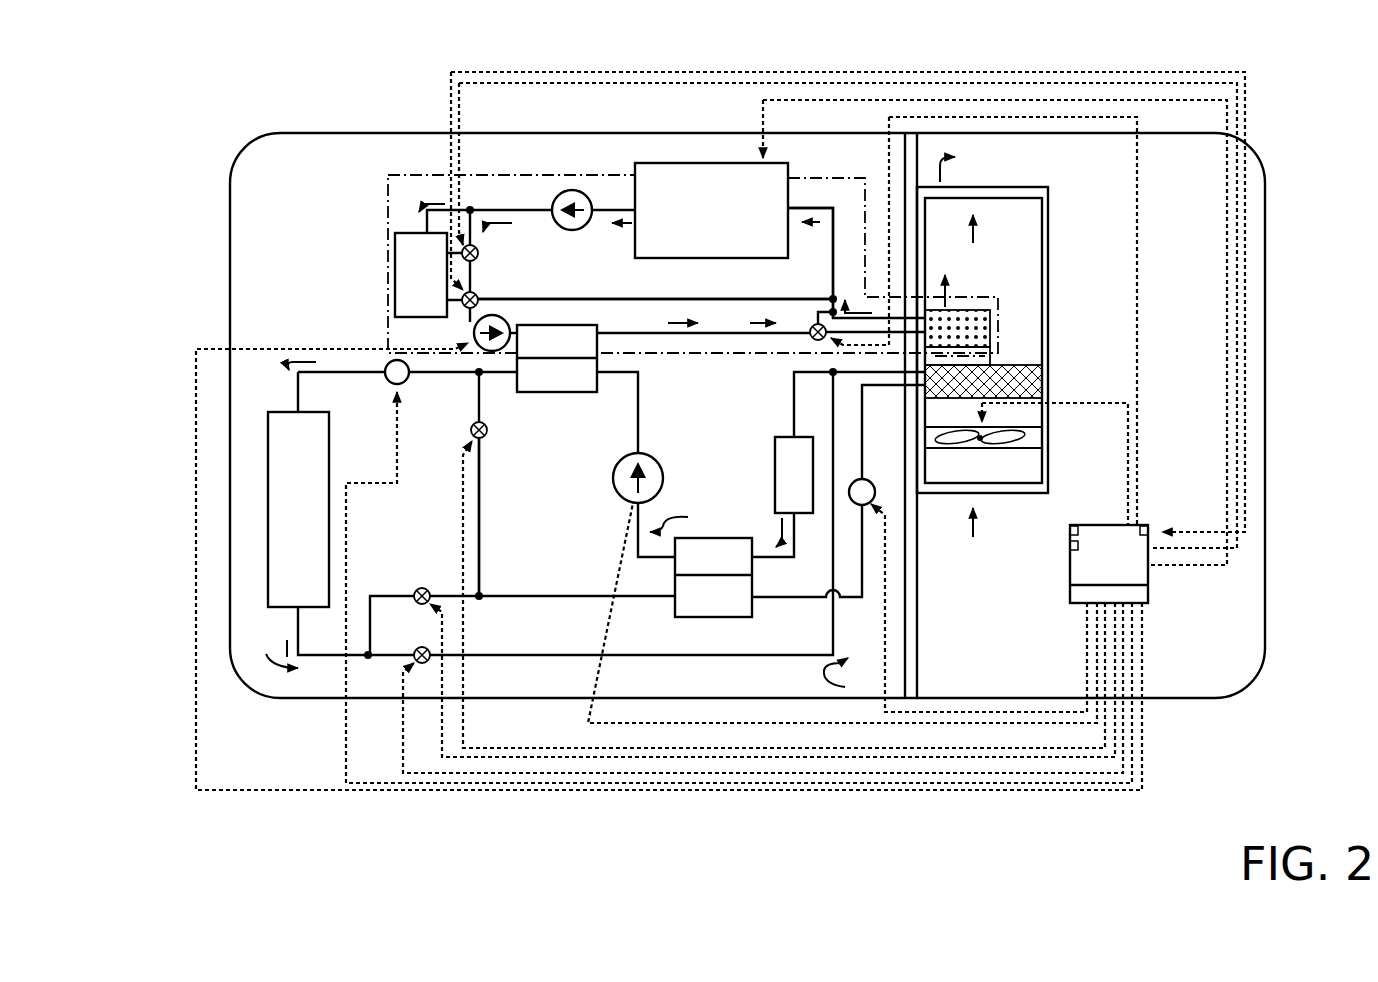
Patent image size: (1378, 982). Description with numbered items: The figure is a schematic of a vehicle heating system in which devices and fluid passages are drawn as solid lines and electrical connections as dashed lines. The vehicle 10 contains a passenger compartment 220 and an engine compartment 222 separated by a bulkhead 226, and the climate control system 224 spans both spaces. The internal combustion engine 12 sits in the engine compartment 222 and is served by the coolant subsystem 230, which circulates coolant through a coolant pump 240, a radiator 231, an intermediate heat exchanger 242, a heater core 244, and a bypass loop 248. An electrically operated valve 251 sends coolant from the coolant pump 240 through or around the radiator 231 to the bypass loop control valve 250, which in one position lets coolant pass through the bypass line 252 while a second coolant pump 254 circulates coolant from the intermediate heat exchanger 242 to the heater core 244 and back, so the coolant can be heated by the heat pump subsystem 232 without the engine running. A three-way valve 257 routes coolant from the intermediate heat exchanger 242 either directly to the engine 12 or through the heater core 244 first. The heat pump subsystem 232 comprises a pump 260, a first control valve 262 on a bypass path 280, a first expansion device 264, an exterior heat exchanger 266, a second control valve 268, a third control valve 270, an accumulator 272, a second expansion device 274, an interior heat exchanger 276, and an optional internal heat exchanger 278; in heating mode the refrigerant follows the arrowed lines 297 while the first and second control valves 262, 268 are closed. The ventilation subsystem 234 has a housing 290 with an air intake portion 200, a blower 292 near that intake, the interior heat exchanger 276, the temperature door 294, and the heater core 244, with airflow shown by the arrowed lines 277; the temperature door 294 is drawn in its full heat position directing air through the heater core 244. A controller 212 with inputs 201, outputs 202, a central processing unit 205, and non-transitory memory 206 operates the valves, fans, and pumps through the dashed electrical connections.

The vehicle 10 is at (238, 152).
The internal combustion engine 12 is at (699, 221).
The air intake portion 200 is at (959, 479).
The inputs 201 is at (1150, 528).
The outputs 202 is at (1135, 595).
The central processing unit 205 is at (1068, 546).
The non-transitory memory 206 is at (1068, 531).
The controller 212 is at (1109, 564).
The passenger compartment 220 is at (1167, 329).
The engine compartment 222 is at (277, 211).
The climate control system 224 is at (419, 155).
The bulkhead 226 is at (918, 640).
The coolant subsystem 230 is at (388, 196).
The radiator 231 is at (421, 275).
The heat pump subsystem 232 is at (359, 316).
The ventilation subsystem 234 is at (1060, 207).
The coolant pump 240 is at (580, 226).
The intermediate heat exchanger 242 is at (547, 324).
The heater core 244 is at (986, 310).
The bypass loop 248 is at (786, 291).
The bypass loop control valve 250 is at (478, 292).
The electrically operated valve 251 is at (480, 257).
The bypass line 252 is at (683, 298).
The second coolant pump 254 is at (504, 316).
The three-way valve 257 is at (810, 338).
The pump 260 is at (617, 483).
The first control valve 262 is at (470, 428).
The first expansion device 264 is at (388, 381).
The exterior heat exchanger 266 is at (280, 519).
The second control valve 268 is at (428, 589).
The third control valve 270 is at (421, 646).
The accumulator 272 is at (777, 480).
The second expansion device 274 is at (872, 483).
The interior heat exchanger 276 is at (1045, 381).
The arrowed lines 277 is at (975, 534).
The internal heat exchanger 278 is at (695, 569).
The bypass path 280 is at (482, 519).
The housing 290 is at (1050, 478).
The blower 292 is at (1046, 438).
The temperature door 294 is at (995, 353).
The arrowed lines 297 is at (561, 529).